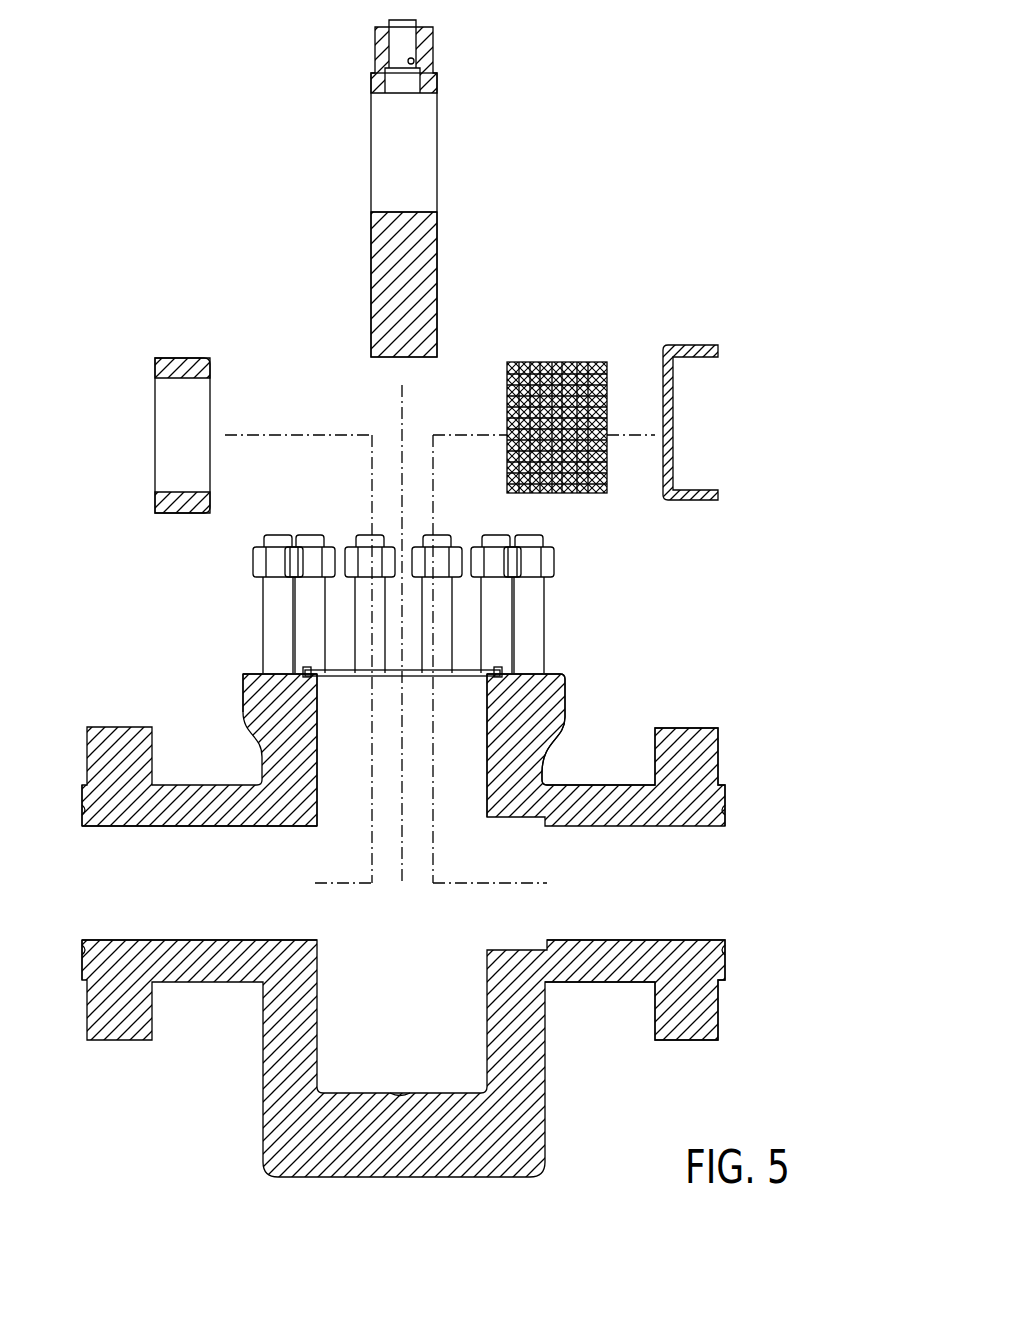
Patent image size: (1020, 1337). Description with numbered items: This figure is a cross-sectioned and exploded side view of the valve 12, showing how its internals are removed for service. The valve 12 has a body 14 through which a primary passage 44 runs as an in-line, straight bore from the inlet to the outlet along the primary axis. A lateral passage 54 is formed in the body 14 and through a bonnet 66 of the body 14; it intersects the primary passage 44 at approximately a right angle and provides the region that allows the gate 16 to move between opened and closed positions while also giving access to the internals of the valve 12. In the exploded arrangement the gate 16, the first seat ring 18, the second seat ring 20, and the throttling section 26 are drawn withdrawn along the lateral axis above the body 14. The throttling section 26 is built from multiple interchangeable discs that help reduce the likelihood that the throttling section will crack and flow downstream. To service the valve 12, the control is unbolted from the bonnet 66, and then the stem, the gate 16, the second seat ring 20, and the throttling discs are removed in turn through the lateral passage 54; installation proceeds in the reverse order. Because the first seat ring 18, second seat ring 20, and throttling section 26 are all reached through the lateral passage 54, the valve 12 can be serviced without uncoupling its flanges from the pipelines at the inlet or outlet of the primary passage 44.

The valve 12 is at (435, 907).
The body 14 is at (576, 778).
The gate 16 is at (440, 74).
The first seat ring 18 is at (187, 356).
The second seat ring 20 is at (706, 344).
The throttling section 26 is at (579, 361).
The primary passage 44 is at (171, 830).
The lateral passage 54 is at (322, 750).
The bonnet 66 is at (568, 690).